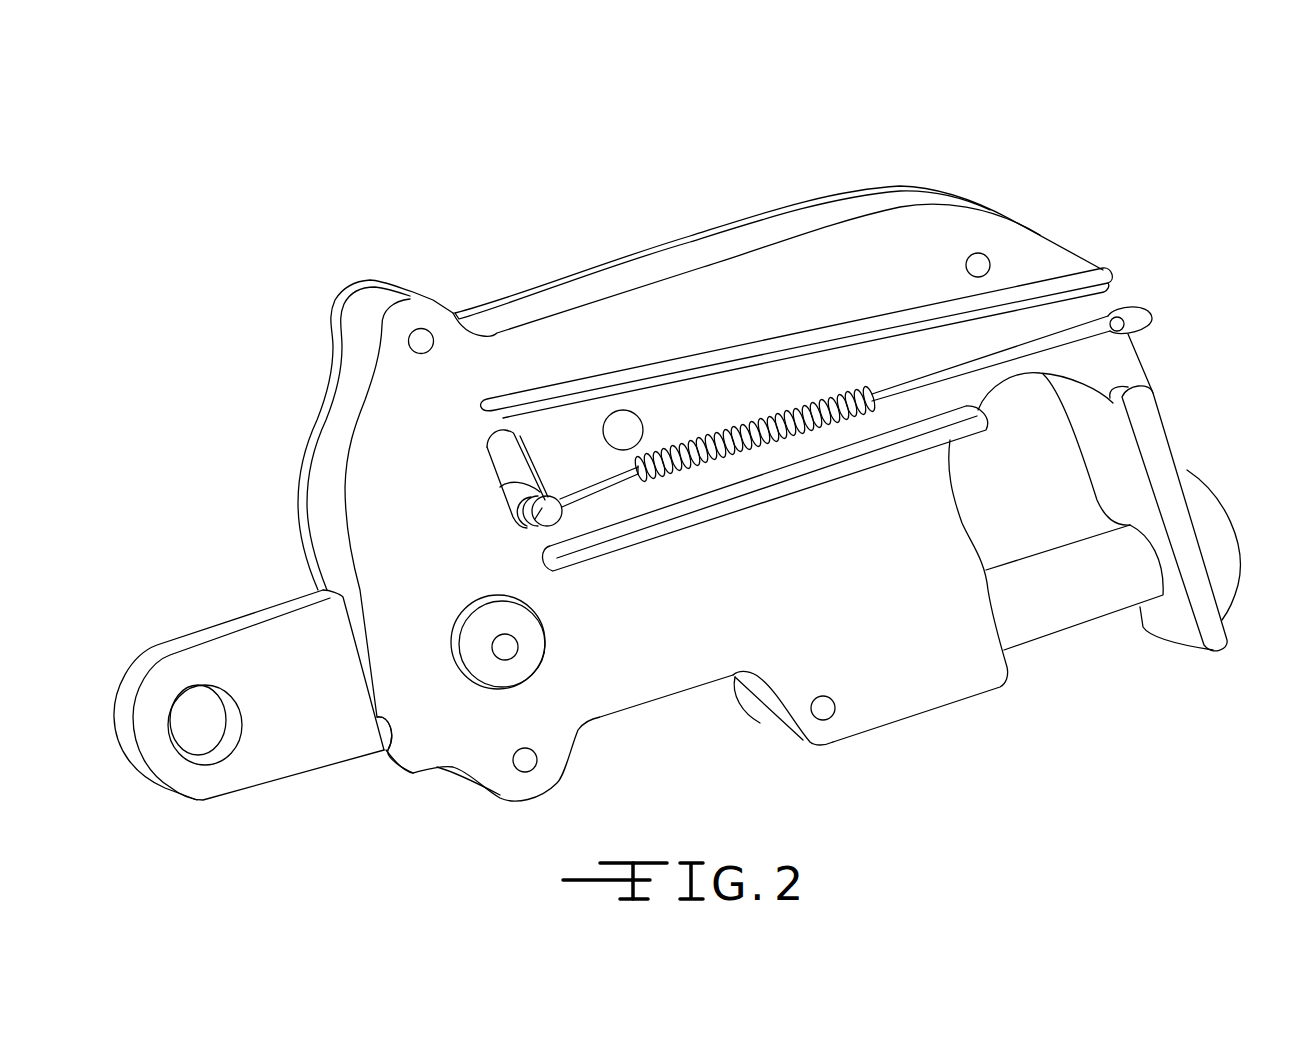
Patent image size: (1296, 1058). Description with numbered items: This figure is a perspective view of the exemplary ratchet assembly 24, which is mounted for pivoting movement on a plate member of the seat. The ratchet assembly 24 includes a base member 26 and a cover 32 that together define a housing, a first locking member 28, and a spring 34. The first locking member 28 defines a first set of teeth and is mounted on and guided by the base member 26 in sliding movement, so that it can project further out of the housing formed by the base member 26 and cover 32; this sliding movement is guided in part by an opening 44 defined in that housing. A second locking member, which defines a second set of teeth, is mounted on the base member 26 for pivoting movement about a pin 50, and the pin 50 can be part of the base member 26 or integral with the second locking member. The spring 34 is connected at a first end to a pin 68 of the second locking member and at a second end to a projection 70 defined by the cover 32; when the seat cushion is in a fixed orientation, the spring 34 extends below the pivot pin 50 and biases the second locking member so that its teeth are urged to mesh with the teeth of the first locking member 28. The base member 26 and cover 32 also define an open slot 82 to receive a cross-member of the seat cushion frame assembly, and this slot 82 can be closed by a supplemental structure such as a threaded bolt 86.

The ratchet assembly 24 is at (711, 160).
The base member 26 is at (332, 345).
The first locking member 28 is at (270, 748).
The cover 32 is at (958, 226).
The spring 34 is at (1112, 295).
The opening 44 is at (380, 757).
The pin 50 is at (625, 432).
The pin 68 is at (527, 527).
The projection 70 is at (1150, 313).
The open slot 82 is at (1117, 463).
The threaded bolt 86 is at (1057, 608).